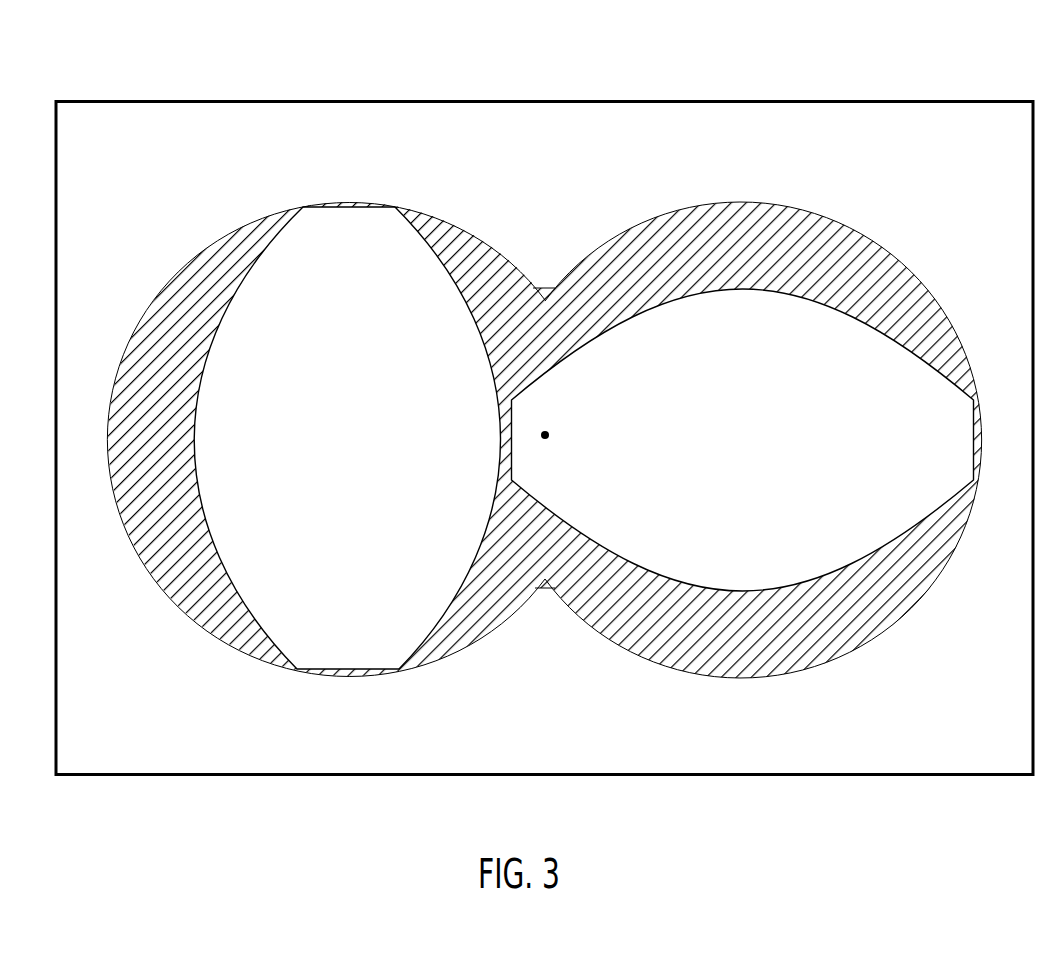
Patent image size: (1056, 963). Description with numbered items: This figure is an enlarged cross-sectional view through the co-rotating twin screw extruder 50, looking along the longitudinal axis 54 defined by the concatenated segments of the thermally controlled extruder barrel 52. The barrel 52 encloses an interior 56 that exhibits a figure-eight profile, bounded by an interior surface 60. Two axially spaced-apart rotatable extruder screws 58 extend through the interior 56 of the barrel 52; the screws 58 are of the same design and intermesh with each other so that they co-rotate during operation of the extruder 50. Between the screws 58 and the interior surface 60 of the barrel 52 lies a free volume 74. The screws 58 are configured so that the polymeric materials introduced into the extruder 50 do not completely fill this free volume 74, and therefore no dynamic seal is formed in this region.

The co-rotating twin screw extruder 50 is at (727, 63).
The extruder barrel 52 is at (160, 100).
The longitudinal axis 54 is at (553, 433).
The interior 56 is at (152, 274).
The extruder screws 58 is at (337, 225).
The interior surface 60 is at (447, 228).
The free volume 74 is at (818, 258).